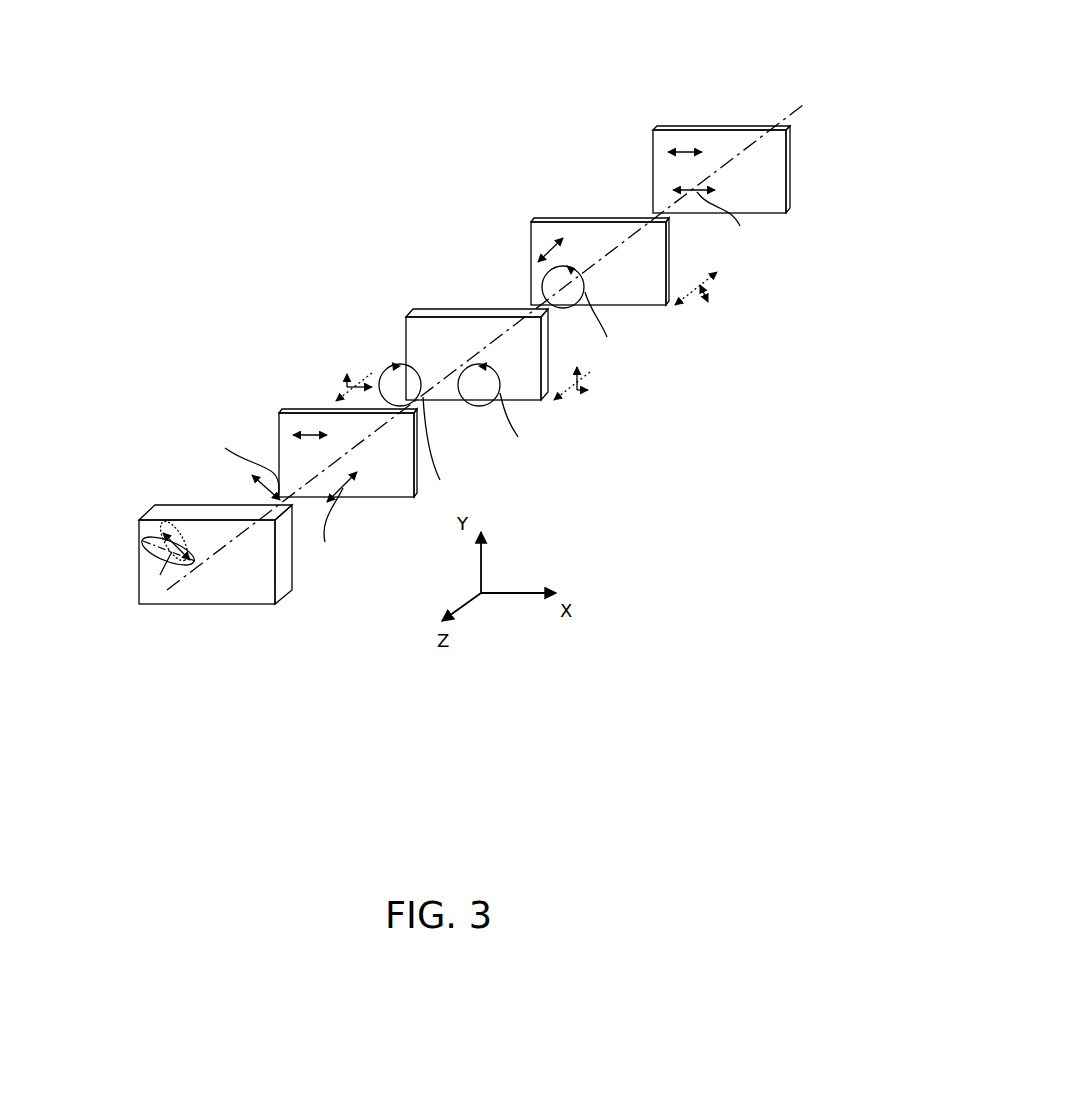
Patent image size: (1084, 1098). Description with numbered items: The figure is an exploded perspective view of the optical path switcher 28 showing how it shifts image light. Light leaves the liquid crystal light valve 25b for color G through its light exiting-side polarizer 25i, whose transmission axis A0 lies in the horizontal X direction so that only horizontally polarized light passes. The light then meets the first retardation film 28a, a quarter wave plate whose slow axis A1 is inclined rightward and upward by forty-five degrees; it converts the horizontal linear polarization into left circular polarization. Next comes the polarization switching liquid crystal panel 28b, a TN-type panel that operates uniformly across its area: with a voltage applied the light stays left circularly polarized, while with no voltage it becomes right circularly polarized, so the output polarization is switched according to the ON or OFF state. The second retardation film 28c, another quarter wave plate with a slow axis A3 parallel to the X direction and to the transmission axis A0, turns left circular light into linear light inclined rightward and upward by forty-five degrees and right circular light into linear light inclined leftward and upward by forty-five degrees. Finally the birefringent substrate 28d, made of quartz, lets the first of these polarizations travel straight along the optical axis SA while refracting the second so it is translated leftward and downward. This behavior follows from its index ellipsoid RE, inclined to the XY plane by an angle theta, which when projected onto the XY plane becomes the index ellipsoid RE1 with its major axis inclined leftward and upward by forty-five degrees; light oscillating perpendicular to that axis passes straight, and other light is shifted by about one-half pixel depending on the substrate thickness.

The liquid crystal light valve 25b is at (723, 168).
The light exiting-side polarizer 25i is at (680, 127).
The transmission axis A0 is at (680, 150).
The optical path switcher 28 is at (344, 248).
The first retardation film 28a is at (530, 243).
The polarization switching liquid crystal panel 28b is at (406, 347).
The second retardation film 28c is at (279, 440).
The birefringent substrate 28d is at (163, 507).
The slow axis A1 is at (552, 250).
The slow axis A3 is at (310, 432).
The index ellipsoid RE is at (152, 558).
The projected index ellipsoid RE1 is at (152, 542).
The optical axis SA is at (187, 577).